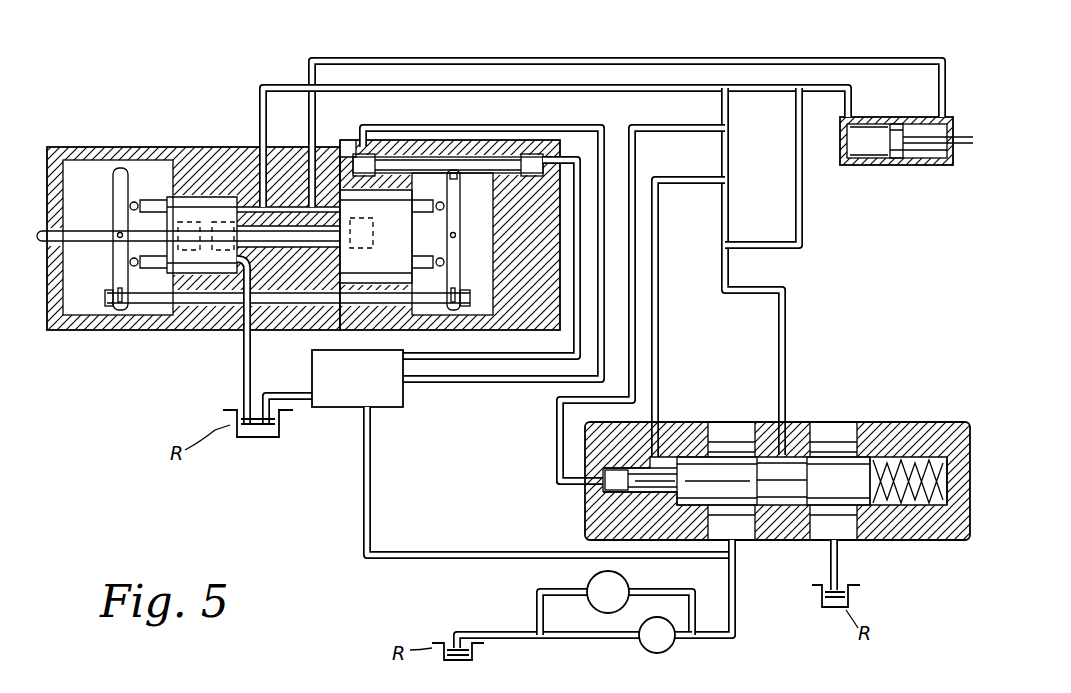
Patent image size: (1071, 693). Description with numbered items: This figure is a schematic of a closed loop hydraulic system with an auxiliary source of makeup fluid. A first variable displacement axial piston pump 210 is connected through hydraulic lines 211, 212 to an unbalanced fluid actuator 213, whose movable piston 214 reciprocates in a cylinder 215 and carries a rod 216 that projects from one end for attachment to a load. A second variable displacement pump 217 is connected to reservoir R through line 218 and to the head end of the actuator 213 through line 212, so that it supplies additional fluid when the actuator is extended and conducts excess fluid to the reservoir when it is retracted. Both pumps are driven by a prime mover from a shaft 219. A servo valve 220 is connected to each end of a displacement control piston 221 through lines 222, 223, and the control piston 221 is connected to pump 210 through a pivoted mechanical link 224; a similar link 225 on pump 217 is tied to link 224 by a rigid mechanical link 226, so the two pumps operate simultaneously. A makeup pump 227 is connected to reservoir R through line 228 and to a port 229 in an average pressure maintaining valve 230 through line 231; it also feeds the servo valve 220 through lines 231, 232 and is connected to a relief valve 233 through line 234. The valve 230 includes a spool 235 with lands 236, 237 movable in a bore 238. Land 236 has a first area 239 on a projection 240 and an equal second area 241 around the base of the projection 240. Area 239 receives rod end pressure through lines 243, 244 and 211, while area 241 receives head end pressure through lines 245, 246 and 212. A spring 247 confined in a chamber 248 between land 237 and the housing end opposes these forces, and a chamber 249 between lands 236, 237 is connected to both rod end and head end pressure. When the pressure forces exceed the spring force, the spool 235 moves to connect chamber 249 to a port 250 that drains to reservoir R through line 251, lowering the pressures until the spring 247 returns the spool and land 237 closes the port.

The first variable displacement axial piston pump 210 is at (346, 139).
The hydraulic line 211 is at (342, 56).
The hydraulic line 212 is at (263, 112).
The unbalanced fluid actuator 213 is at (884, 118).
The movable piston 214 is at (895, 166).
The cylinder 215 is at (873, 151).
The rod 216 is at (930, 152).
The second variable displacement pump 217 is at (195, 144).
The line 218 is at (244, 353).
The shaft 219 is at (83, 231).
The servo valve 220 is at (403, 407).
The displacement control piston 221 is at (440, 157).
The line 222 is at (562, 158).
The line 223 is at (606, 132).
The pivoted mechanical link 224 is at (458, 218).
The link 225 is at (115, 175).
The rigid mechanical link 226 is at (148, 303).
The makeup pump 227 is at (676, 642).
The line 228 is at (560, 637).
The port 229 is at (750, 538).
The average pressure maintaining valve 230 is at (892, 410).
The line 231 is at (740, 595).
The line 232 is at (420, 550).
The relief valve 233 is at (587, 581).
The line 234 is at (651, 588).
The spool 235 is at (803, 470).
The land 236 is at (695, 470).
The land 237 is at (843, 465).
The bore 238 is at (900, 493).
The first area 239 is at (602, 482).
The projection 240 is at (640, 450).
The second area 241 is at (667, 500).
The line 243 is at (555, 440).
The line 244 is at (724, 153).
The line 245 is at (660, 323).
The line 246 is at (797, 155).
The spring 247 is at (932, 432).
The chamber 248 is at (892, 474).
The chamber 249 is at (757, 457).
The port 250 is at (855, 538).
The line 251 is at (842, 571).